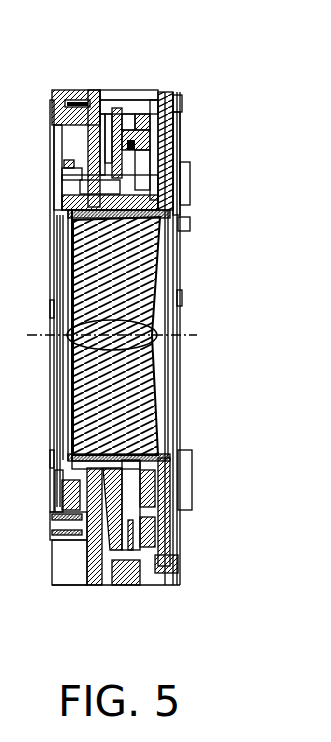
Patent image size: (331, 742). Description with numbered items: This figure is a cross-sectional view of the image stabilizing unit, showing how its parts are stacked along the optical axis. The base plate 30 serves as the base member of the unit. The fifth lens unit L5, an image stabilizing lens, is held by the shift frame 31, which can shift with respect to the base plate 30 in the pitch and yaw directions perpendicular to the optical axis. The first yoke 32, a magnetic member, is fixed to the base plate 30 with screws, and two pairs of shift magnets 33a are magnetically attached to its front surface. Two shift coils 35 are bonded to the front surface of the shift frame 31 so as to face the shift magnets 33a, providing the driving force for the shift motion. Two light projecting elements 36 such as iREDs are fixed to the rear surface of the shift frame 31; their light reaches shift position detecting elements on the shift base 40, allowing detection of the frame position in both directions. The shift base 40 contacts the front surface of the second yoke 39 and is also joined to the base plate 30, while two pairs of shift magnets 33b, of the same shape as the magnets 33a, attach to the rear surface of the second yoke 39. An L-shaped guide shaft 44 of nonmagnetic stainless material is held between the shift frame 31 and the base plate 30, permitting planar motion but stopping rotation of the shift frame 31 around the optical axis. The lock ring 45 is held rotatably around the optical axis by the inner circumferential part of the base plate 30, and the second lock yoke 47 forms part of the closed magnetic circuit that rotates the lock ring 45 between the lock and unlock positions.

The base plate 30 is at (93, 88).
The shift frame 31 is at (160, 240).
The first yoke 32 is at (80, 560).
The shift magnets 33a is at (98, 553).
The shift magnets 33b is at (160, 547).
The shift coils 35 is at (137, 555).
The light projecting elements 36 is at (140, 90).
The second yoke 39 is at (177, 96).
The shift base 40 is at (178, 127).
The guide shaft 44 is at (124, 135).
The lock ring 45 is at (72, 177).
The second lock yoke 47 is at (53, 133).
The fifth lens unit L5 is at (167, 337).